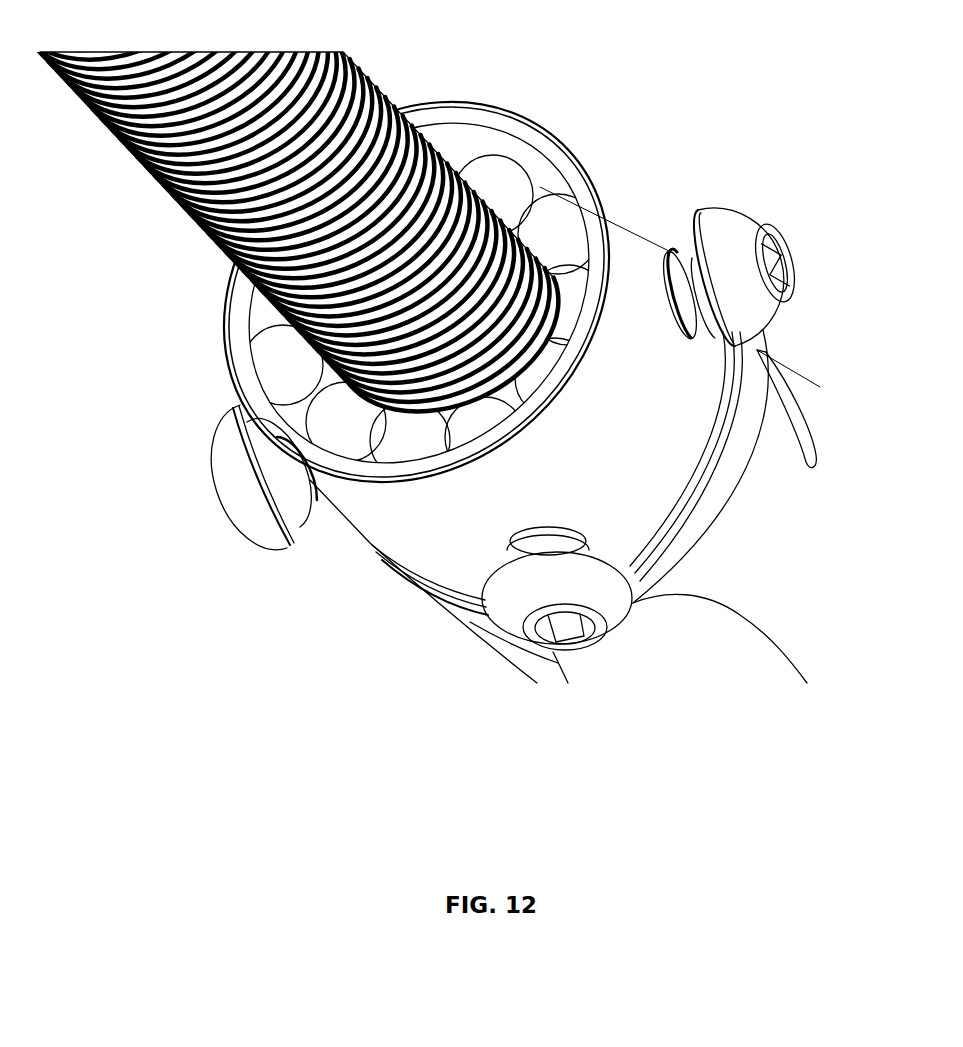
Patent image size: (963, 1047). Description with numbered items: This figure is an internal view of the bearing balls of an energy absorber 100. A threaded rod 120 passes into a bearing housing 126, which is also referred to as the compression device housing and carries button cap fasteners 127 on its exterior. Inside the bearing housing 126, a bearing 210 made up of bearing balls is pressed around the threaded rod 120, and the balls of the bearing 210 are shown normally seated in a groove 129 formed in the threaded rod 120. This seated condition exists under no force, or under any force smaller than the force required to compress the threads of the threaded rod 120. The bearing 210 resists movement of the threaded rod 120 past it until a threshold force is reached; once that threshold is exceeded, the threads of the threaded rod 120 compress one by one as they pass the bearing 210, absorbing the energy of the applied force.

The energy absorber 100 is at (775, 83).
The threaded rod 120 is at (177, 187).
The bearing housing 126 is at (682, 473).
The button cap fasteners 127 is at (742, 212).
The groove 129 is at (537, 330).
The bearing 210 is at (563, 212).